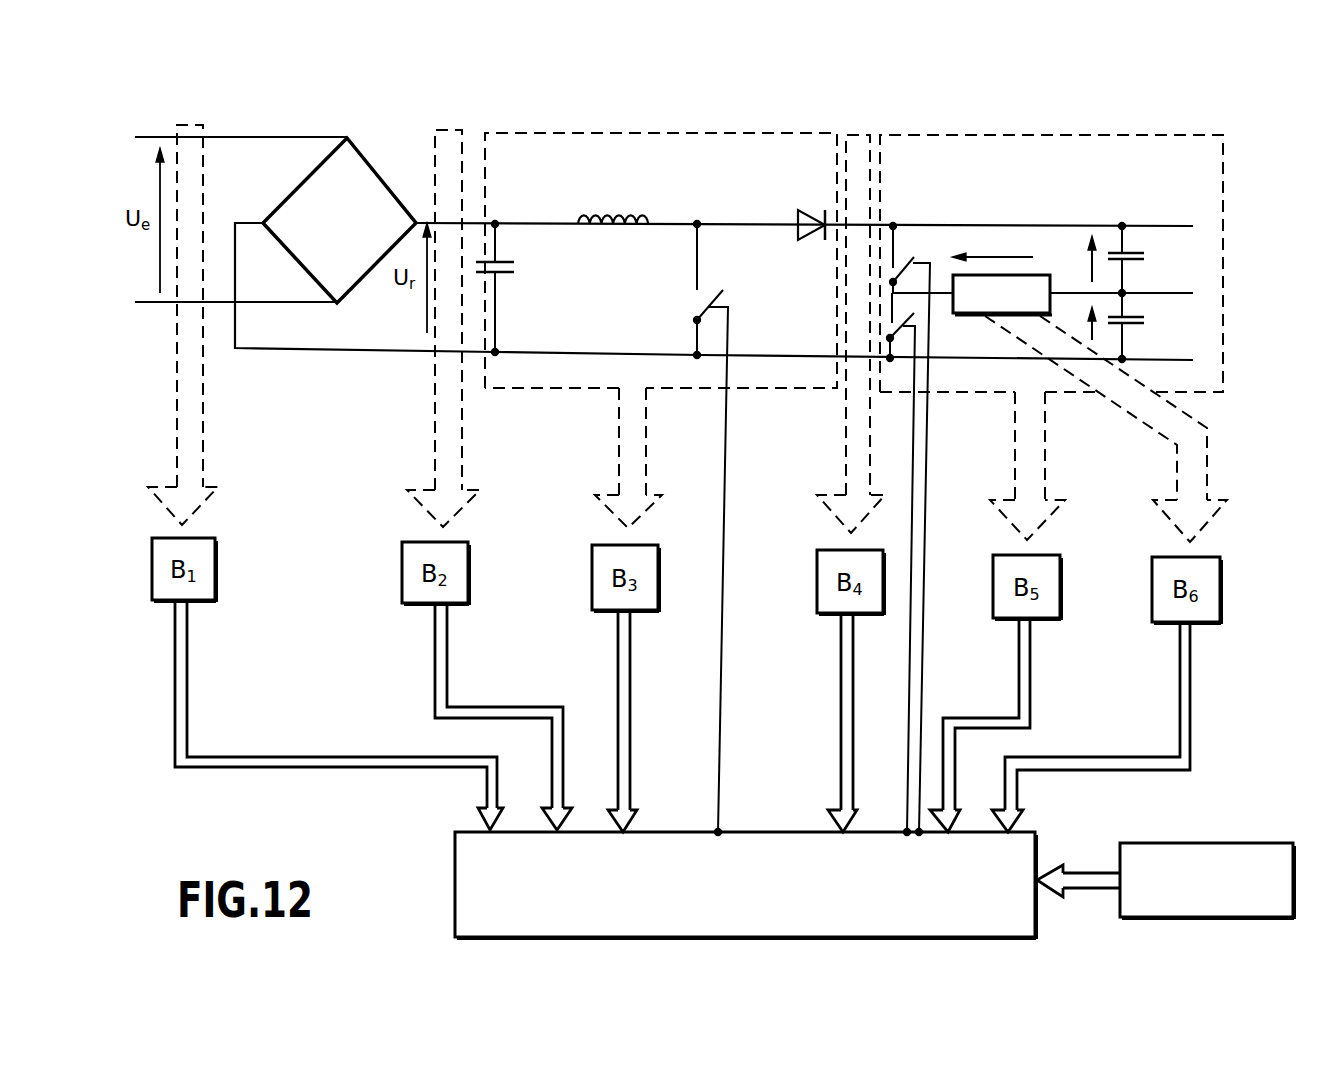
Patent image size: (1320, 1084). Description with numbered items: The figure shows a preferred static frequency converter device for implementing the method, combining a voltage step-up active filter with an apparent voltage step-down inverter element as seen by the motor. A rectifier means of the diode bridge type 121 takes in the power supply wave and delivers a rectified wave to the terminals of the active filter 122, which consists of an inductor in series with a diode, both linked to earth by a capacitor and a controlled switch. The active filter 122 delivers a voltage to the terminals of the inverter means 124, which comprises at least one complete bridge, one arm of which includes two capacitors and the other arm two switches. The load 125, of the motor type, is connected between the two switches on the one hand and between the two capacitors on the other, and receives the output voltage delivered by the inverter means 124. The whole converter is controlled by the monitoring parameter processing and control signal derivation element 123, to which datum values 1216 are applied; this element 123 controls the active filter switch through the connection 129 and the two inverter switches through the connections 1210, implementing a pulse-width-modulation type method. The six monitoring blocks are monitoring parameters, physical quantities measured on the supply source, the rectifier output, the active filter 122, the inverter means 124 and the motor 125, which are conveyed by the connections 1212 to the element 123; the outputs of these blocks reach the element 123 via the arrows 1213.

The rectifier means 121 is at (385, 176).
The active filter 122 is at (624, 133).
The monitoring parameter processing and control signal derivation element 123 is at (455, 896).
The inverter means 124 is at (1035, 135).
The load 125 is at (1025, 275).
The connection 129 is at (727, 505).
The connections 1210 is at (915, 648).
The connections 1212 is at (435, 425).
The monitoring parameter outputs 1213 is at (435, 710).
The datum values 1216 is at (1245, 843).